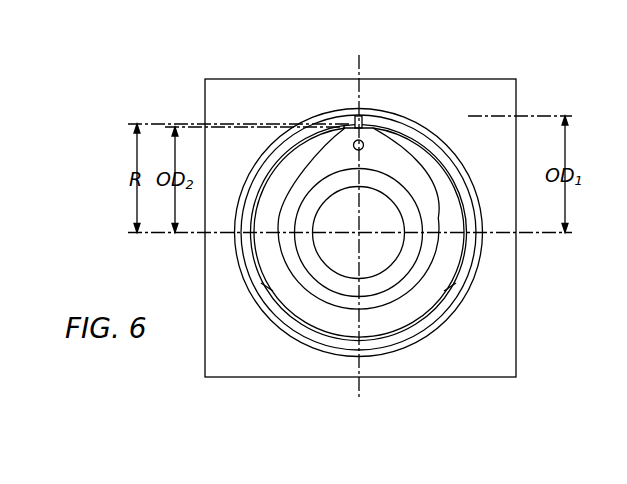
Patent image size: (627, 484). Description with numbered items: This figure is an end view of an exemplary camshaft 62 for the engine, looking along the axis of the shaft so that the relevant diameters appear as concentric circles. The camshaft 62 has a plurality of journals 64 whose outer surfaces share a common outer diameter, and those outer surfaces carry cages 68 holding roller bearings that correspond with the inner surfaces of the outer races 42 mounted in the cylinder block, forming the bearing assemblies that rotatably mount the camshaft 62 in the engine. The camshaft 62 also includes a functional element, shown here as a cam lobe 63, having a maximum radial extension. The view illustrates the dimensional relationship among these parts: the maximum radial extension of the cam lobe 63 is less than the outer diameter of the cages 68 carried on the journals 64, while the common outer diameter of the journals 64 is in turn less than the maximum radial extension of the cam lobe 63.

The outer race 42 is at (308, 122).
The camshaft 62 is at (253, 328).
The cam lobe 63 is at (392, 307).
The journal 64 is at (422, 140).
The cage 68 is at (353, 118).